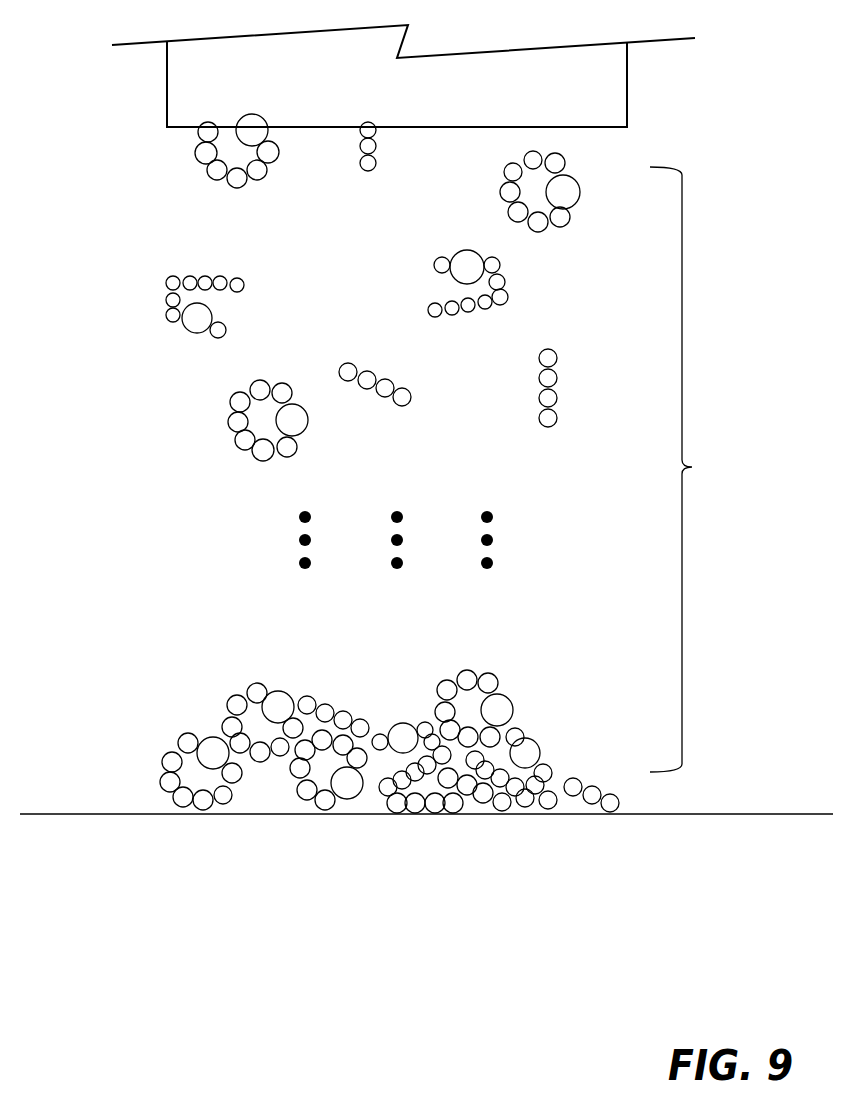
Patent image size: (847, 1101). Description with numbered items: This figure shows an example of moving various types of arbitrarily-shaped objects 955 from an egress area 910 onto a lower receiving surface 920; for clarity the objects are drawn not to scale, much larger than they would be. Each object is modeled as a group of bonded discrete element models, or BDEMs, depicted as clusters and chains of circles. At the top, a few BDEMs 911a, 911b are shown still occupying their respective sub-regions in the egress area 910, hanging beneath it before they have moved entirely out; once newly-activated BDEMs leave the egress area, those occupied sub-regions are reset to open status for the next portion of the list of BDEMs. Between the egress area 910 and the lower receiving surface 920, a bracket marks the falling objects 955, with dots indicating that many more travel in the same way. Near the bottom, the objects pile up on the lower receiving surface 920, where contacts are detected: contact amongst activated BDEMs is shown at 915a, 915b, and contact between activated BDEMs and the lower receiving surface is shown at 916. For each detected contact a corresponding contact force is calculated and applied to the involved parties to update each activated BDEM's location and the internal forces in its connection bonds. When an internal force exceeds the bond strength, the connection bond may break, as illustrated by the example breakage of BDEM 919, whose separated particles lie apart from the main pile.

The egress area 910 is at (403, 76).
The BDEM occupying a sub-region 911a is at (178, 167).
The BDEM occupying a sub-region 911b is at (308, 171).
The activated BDEM in contact 915a is at (295, 684).
The activated BDEM in contact 915b is at (189, 729).
The contact between activated BDEM and lower receiving surface 916 is at (370, 749).
The BDEM with broken connection bond 919 is at (595, 752).
The lower receiving surface 920 is at (426, 844).
The arbitrarily-shaped objects 955 is at (692, 467).